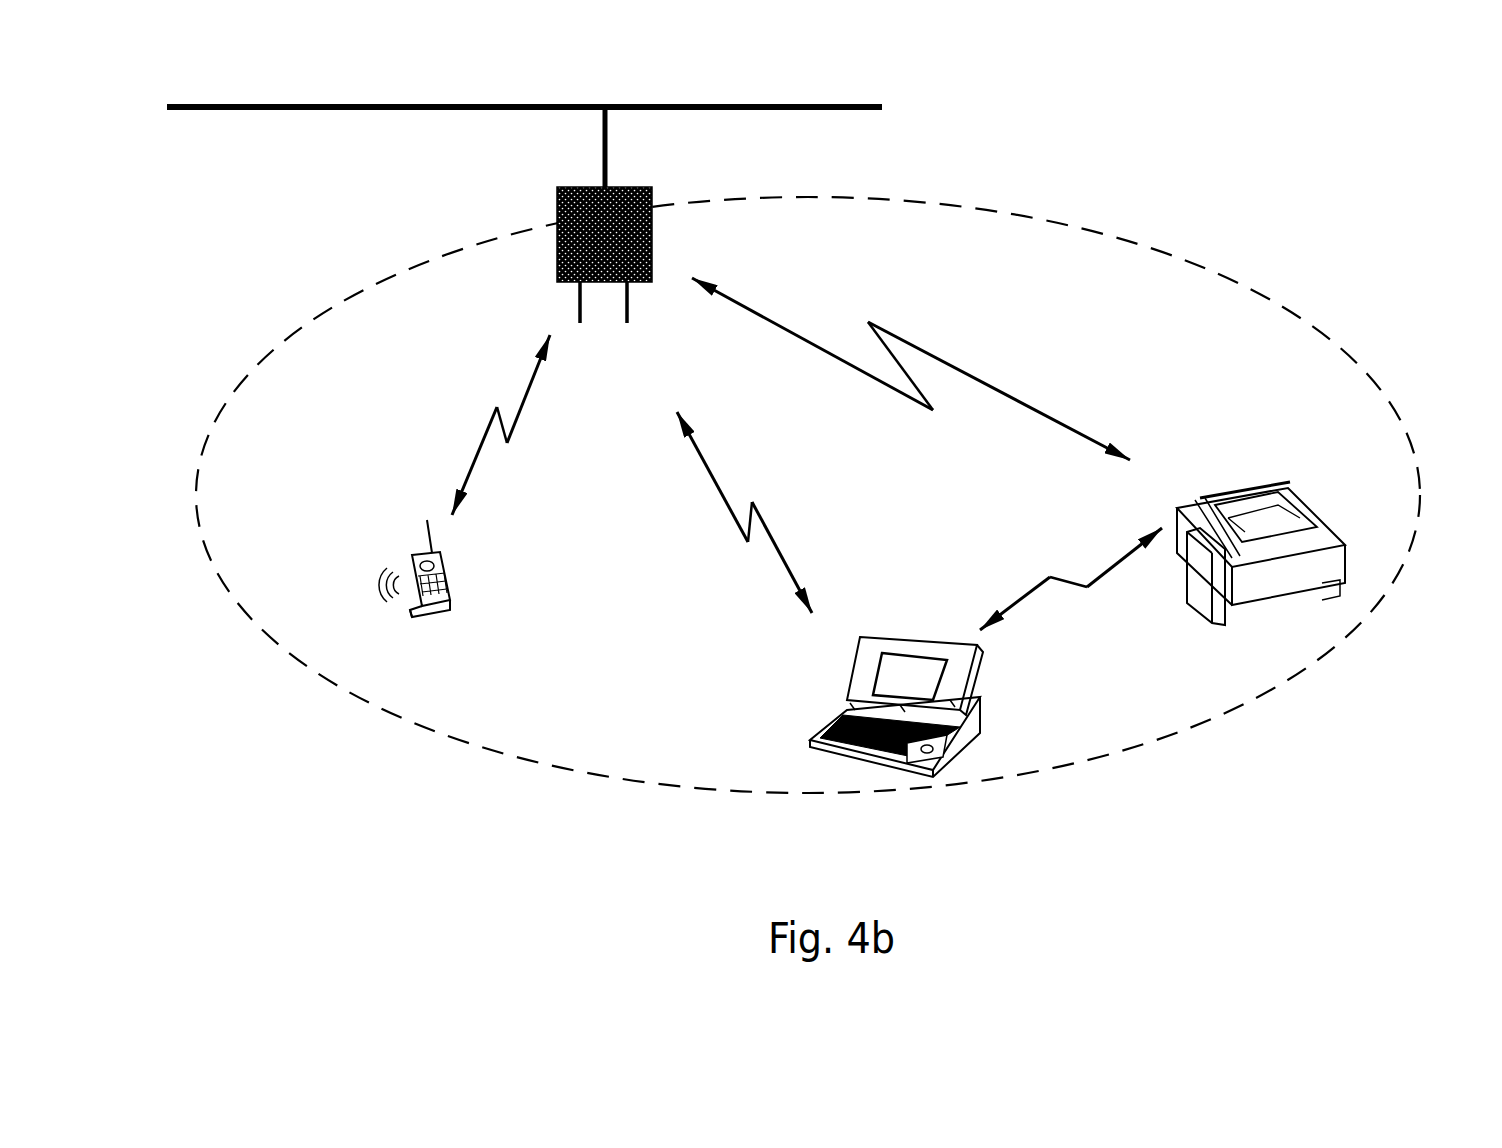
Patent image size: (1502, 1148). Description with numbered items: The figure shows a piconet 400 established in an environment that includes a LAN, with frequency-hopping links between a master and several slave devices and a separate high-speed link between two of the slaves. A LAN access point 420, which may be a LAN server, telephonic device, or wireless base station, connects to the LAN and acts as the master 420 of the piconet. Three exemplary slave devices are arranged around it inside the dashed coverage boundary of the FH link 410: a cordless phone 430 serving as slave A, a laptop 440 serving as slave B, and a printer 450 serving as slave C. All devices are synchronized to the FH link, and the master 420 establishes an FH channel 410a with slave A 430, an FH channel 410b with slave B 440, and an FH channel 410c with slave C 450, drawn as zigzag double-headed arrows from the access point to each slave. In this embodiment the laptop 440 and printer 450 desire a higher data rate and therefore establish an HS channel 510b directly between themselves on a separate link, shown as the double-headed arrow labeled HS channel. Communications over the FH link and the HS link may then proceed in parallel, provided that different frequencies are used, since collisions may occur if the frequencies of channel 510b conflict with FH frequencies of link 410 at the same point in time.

The piconet 400 is at (1243, 208).
The FH link 410 is at (1300, 318).
The channel to slave A 410a is at (527, 428).
The channel to slave B 410b is at (782, 543).
The channel to slave C 410c is at (947, 343).
The HS channel between slaves 510b is at (1060, 547).
The LAN access point (master) 420 is at (557, 202).
The cordless phone (slave A) 430 is at (413, 552).
The laptop (slave B) 440 is at (845, 668).
The printer (slave C) 450 is at (1207, 620).